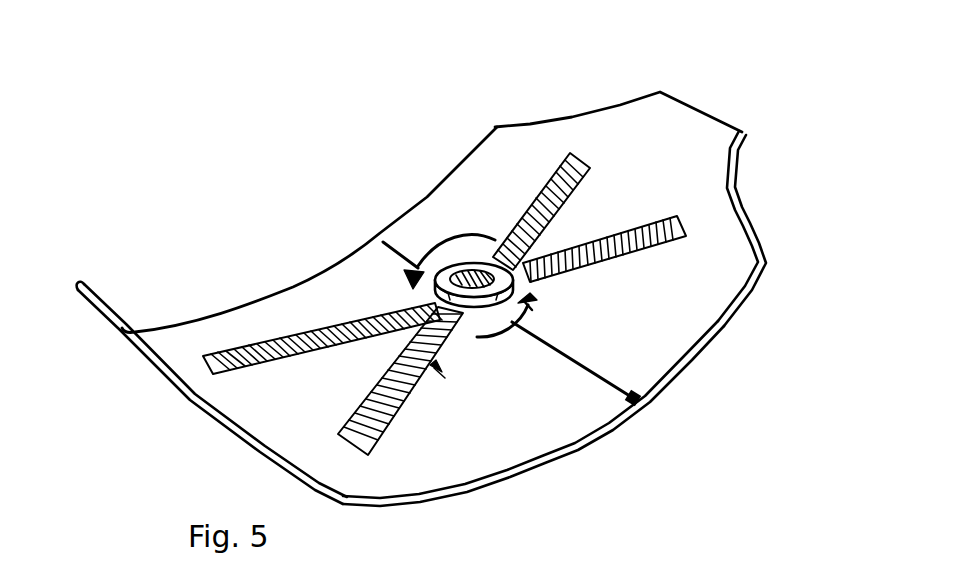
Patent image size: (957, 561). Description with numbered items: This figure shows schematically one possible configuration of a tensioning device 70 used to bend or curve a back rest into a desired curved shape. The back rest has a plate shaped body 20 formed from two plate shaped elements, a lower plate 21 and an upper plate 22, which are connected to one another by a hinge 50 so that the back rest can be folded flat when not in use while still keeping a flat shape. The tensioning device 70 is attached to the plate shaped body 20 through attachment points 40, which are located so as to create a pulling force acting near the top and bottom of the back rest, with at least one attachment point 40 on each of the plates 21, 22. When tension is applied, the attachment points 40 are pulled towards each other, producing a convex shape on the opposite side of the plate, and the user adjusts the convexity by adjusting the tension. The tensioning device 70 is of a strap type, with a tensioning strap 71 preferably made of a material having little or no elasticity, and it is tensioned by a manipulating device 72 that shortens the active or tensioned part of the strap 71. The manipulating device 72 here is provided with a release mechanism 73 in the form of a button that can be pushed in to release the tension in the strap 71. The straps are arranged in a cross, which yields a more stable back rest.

The plate shaped body 20 is at (445, 138).
The lower plate 21 is at (670, 340).
The upper plate 22 is at (450, 467).
The attachment points 40 is at (578, 150).
The hinge 50 is at (640, 410).
The tensioning device 70 is at (443, 228).
The tensioning strap 71 is at (440, 372).
The manipulating device 72 is at (538, 303).
The release mechanism 73 is at (412, 268).